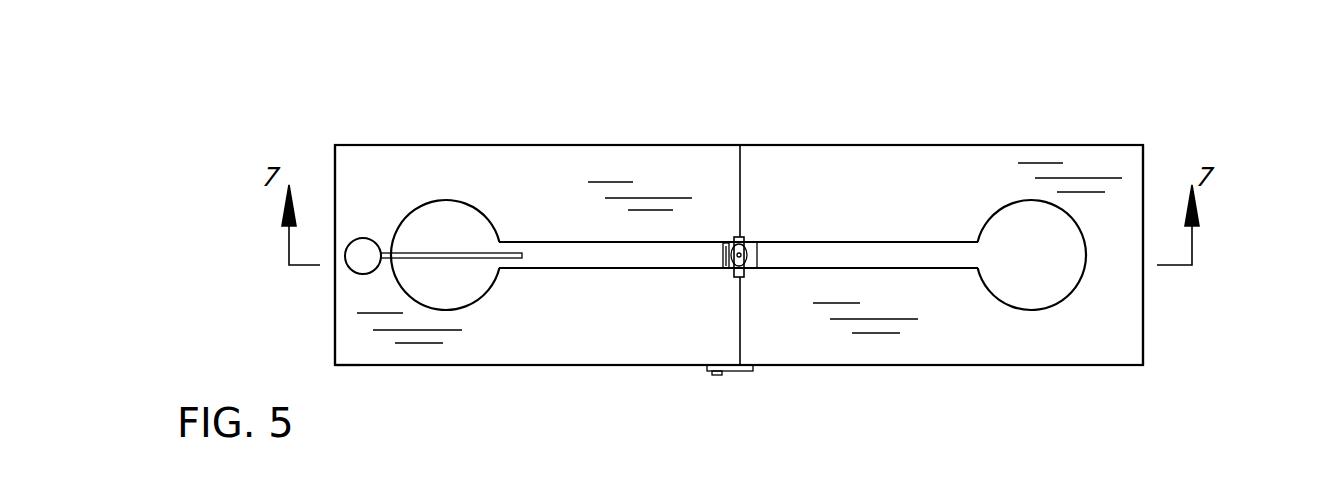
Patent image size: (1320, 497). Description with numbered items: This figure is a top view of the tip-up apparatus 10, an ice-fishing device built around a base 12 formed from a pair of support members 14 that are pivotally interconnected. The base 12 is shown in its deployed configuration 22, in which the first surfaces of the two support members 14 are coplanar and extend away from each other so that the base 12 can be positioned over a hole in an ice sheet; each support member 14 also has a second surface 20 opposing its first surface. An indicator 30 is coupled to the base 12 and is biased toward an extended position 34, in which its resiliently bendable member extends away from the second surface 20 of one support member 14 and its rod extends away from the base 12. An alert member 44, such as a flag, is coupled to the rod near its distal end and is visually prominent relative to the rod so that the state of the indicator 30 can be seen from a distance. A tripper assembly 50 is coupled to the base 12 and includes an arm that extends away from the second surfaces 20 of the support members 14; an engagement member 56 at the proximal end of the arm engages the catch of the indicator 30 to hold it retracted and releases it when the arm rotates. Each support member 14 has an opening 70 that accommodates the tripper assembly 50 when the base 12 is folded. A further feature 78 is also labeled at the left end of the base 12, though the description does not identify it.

The tip-up apparatus 10 is at (1102, 101).
The base 12 is at (831, 132).
The support member 14 is at (531, 170).
The second surface 20 is at (530, 330).
The deployed configuration 22 is at (1169, 328).
The indicator 30 is at (356, 288).
The extended position 34 is at (318, 280).
The alert member 44 is at (437, 253).
The tripper assembly 50 is at (759, 283).
The engagement member 56 is at (744, 240).
The opening 70 is at (624, 256).
The inlet port 78 is at (365, 262).